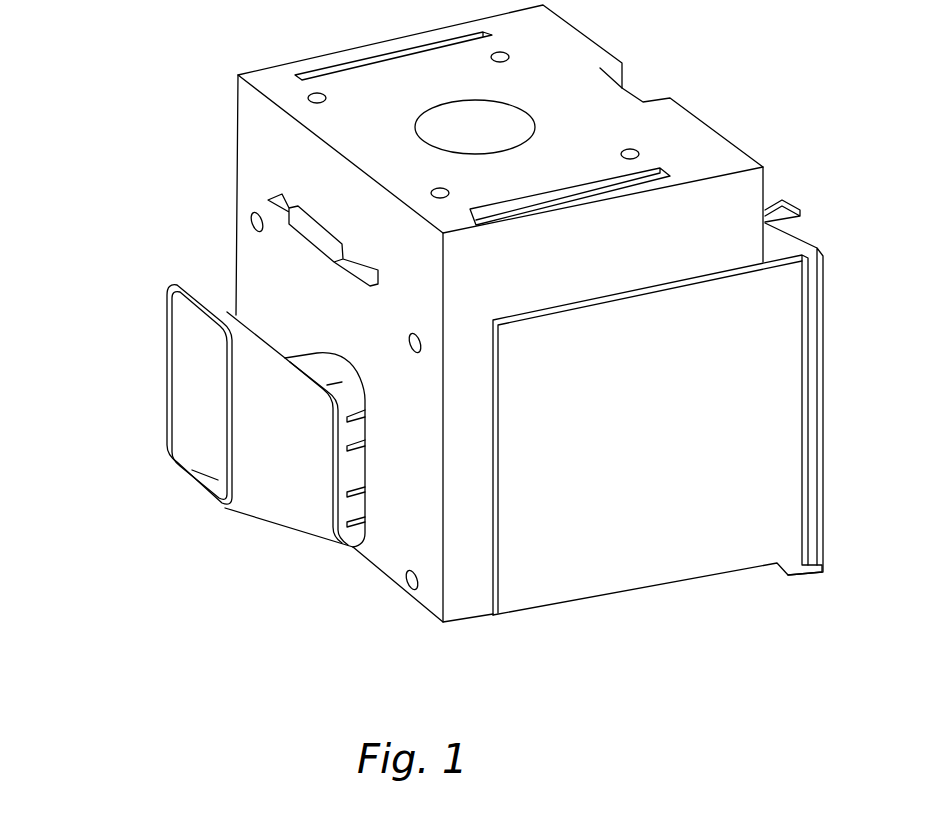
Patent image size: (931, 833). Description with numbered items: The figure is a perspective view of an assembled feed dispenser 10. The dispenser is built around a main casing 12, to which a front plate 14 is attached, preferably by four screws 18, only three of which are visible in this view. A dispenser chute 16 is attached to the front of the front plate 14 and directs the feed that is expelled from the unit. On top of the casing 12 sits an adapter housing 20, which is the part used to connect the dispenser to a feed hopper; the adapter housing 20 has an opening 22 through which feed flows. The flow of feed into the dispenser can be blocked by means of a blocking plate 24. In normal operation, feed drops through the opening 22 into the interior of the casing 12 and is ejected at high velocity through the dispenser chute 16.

The feed dispenser 10 is at (114, 151).
The main casing 12 is at (573, 585).
The front plate 14 is at (382, 555).
The dispenser chute 16 is at (242, 518).
The screws 18 is at (254, 215).
The adapter housing 20 is at (723, 133).
The opening 22 is at (512, 122).
The blocking plate 24 is at (305, 232).